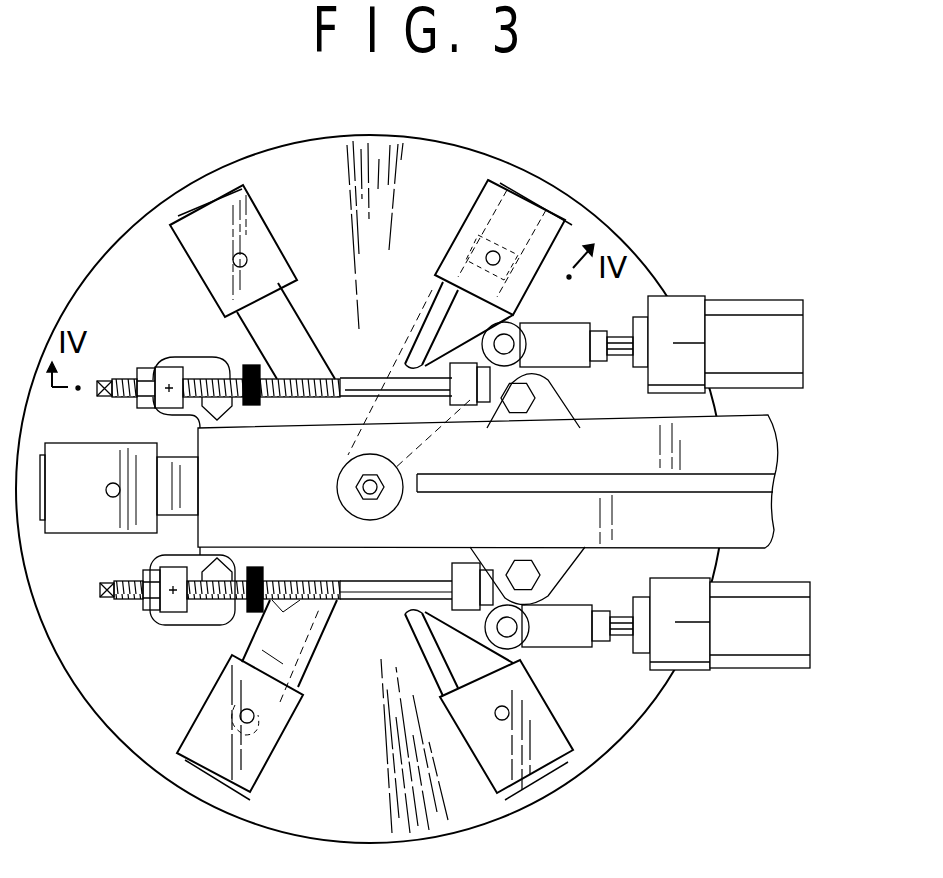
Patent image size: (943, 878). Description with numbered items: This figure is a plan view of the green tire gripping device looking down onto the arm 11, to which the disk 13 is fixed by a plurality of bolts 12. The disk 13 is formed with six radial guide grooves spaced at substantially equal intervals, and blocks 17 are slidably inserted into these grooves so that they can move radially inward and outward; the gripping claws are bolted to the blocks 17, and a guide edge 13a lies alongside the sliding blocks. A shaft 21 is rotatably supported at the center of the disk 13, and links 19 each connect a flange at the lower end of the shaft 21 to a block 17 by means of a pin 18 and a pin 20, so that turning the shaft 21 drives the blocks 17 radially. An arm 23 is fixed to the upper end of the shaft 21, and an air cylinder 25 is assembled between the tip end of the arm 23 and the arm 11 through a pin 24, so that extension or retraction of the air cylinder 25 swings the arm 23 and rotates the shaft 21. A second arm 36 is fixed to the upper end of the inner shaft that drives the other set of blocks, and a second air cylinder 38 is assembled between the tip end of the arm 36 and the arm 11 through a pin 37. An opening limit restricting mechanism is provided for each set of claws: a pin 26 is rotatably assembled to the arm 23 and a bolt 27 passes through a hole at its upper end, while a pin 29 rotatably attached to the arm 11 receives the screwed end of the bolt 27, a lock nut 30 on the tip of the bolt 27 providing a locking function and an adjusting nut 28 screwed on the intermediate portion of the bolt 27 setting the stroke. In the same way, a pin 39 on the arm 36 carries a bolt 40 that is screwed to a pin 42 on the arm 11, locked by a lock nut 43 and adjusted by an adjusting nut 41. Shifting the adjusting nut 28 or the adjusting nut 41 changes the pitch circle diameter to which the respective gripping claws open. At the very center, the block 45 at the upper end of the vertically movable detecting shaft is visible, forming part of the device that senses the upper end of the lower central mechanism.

The arm 11 is at (752, 443).
The bolts 12 is at (530, 397).
The disk 13 is at (145, 742).
The face plate guide 13a is at (298, 688).
The blocks 17 is at (250, 770).
The pin 18 is at (258, 722).
The links 19 is at (305, 670).
The pin 20 is at (300, 677).
The shaft 21 is at (377, 600).
The arm 23 is at (533, 602).
The pin 24 is at (513, 628).
The air cylinder 25 is at (693, 665).
The pin 26 is at (478, 568).
The bolt 27 is at (418, 582).
The adjusting nut 28 is at (257, 567).
The pin 29 is at (173, 612).
The lock nut 30 is at (152, 610).
The arm 36 is at (462, 337).
The pin 37 is at (512, 338).
The air cylinder 38 is at (683, 300).
The pin 39 is at (463, 407).
The bolt 40 is at (365, 379).
The adjusting nut 41 is at (253, 407).
The pin 42 is at (172, 367).
The lock nut 43 is at (143, 368).
The block 45 is at (338, 487).